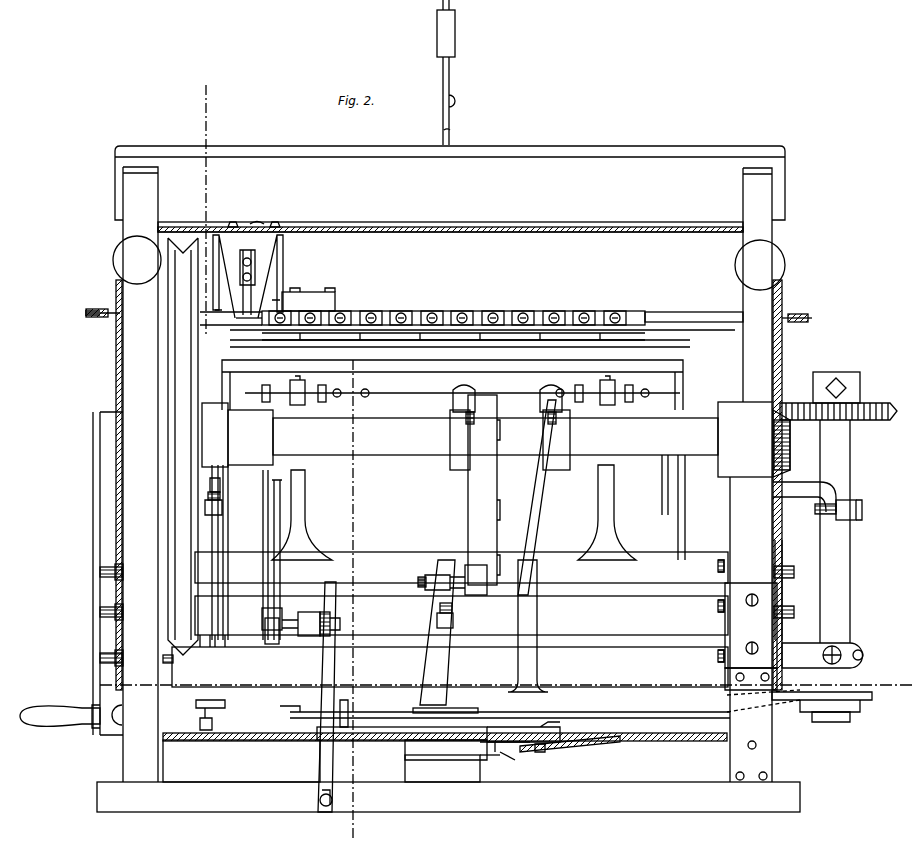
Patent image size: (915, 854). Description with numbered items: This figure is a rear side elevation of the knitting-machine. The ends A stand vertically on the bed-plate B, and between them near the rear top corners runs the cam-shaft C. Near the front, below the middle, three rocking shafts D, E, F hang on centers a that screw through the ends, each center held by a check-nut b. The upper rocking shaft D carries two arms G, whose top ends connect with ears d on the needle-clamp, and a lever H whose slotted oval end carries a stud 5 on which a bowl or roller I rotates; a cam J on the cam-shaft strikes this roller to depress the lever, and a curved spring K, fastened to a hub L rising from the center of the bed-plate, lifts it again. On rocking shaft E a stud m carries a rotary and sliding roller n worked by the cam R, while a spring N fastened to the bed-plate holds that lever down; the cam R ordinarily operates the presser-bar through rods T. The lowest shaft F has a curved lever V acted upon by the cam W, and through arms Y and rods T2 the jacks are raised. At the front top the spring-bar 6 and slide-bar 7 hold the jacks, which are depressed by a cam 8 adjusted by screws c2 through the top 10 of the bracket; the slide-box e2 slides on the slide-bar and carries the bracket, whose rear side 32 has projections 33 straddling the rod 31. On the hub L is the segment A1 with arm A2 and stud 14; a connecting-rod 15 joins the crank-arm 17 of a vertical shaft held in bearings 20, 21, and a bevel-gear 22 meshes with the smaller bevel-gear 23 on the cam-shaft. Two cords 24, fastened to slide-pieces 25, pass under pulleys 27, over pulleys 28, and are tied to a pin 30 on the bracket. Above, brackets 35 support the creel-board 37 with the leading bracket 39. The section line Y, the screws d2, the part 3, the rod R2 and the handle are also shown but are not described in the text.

The top of the bracket 10 is at (446, 28).
The leading bracket 39 is at (457, 101).
The top cover and creel-board 37 is at (450, 176).
The brackets 35 is at (447, 474).
The pulleys 28 is at (450, 263).
The cords 24 is at (448, 479).
The adjusting screws d2 is at (448, 307).
The arms Y is at (279, 467).
The pulley and bracket 3 is at (425, 446).
The spring-bar 6 is at (471, 318).
The rod 31 is at (473, 333).
The rear side of the top bracket 32 is at (254, 282).
The projections 33 is at (251, 312).
The slide-bar 7 is at (253, 276).
The cam 8 is at (247, 289).
The screws c2 is at (257, 216).
The pin 30 is at (259, 216).
The slide-box e2 is at (308, 299).
The ears d is at (462, 393).
The arms G is at (454, 468).
The cam-shaft C is at (460, 436).
The ends A is at (438, 592).
The rods T is at (445, 547).
The rods T2 is at (453, 547).
The cam R is at (260, 555).
The rod R2 is at (279, 560).
The cam J is at (484, 490).
The cam W is at (537, 497).
The curved lever V is at (528, 626).
The curved spring K is at (445, 636).
The lever H is at (434, 580).
The stud 5 is at (457, 579).
The bowl or roller I is at (476, 580).
The upper rocking shaft D is at (461, 567).
The rocking shaft E is at (461, 615).
The rocking shaft F is at (450, 661).
The centers a is at (448, 611).
The rotary and sliding bowl or roller n is at (277, 626).
The stud m is at (311, 624).
The spring N is at (327, 697).
The bed-plate B is at (448, 797).
The arm A2 is at (325, 754).
The hub L is at (452, 768).
The concentric segment of a wheel or pulley A1 is at (523, 732).
The adjustable slide-piece 25 is at (512, 745).
The connecting-rod 15 is at (517, 707).
The stud 14 is at (595, 573).
The bevel-gear 22 is at (838, 402).
The bevel-gear 23 is at (790, 443).
The bearing 21 is at (817, 501).
The bearing 20 is at (822, 655).
The check-nut b is at (447, 603).
The crank-arm 17 is at (799, 699).
The pulleys 27 is at (511, 715).
The element handle is at (71, 716).